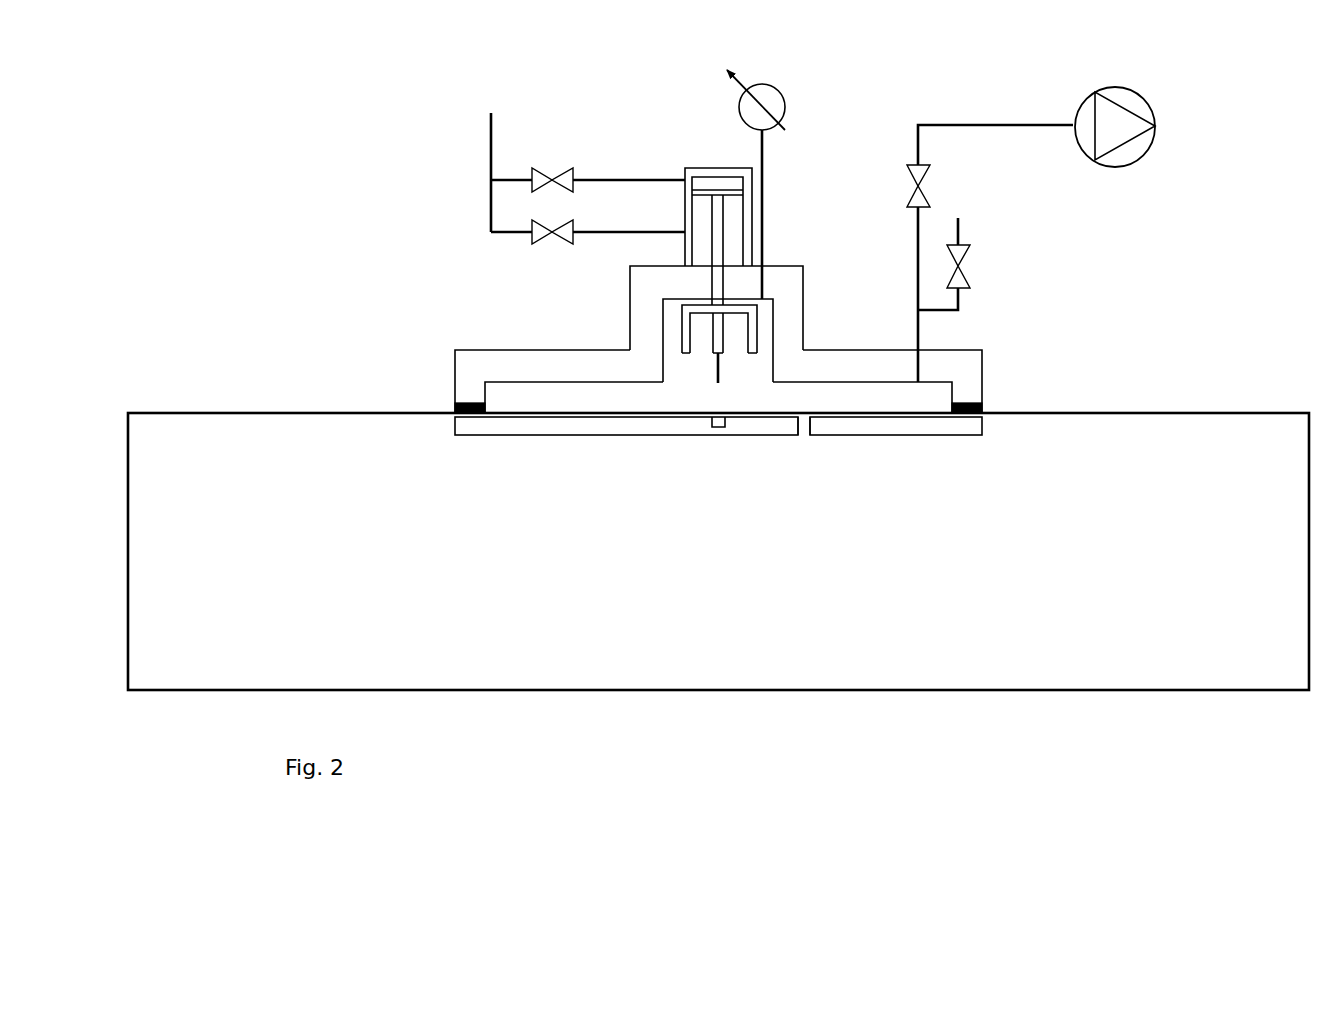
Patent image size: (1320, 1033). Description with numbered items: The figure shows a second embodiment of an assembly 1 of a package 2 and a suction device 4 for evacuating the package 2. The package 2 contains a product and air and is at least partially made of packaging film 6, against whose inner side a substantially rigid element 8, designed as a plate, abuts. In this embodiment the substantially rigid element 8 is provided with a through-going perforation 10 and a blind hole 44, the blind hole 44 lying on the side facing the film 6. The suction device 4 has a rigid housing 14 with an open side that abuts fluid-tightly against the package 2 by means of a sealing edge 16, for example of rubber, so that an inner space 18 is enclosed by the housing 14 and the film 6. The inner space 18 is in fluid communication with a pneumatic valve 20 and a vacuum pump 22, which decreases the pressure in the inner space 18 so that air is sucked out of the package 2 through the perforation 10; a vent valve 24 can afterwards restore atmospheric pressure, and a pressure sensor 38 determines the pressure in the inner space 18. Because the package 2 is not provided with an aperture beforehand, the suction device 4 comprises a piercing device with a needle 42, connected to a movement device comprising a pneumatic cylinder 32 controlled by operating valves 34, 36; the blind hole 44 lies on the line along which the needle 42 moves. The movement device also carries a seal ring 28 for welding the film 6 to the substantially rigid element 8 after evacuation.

The assembly 1 is at (392, 132).
The package 2 is at (313, 413).
The suction device 4 is at (392, 278).
The packaging film 6 is at (516, 413).
The substantially rigid element 8 is at (973, 423).
The perforation 10 is at (803, 440).
The housing 14 is at (973, 368).
The sealing edge 16 is at (982, 407).
The inner space 18 is at (553, 397).
The valve 20 is at (930, 186).
The vacuum pump 22 is at (1115, 87).
The vent valve 24 is at (970, 267).
The seal ring 28 is at (757, 345).
The pneumatic cylinder 32 is at (712, 168).
The operating valve 34 is at (552, 180).
The operating valve 36 is at (552, 232).
The pressure sensor 38 is at (785, 107).
The needle 42 is at (720, 370).
The blind hole 44 is at (715, 414).